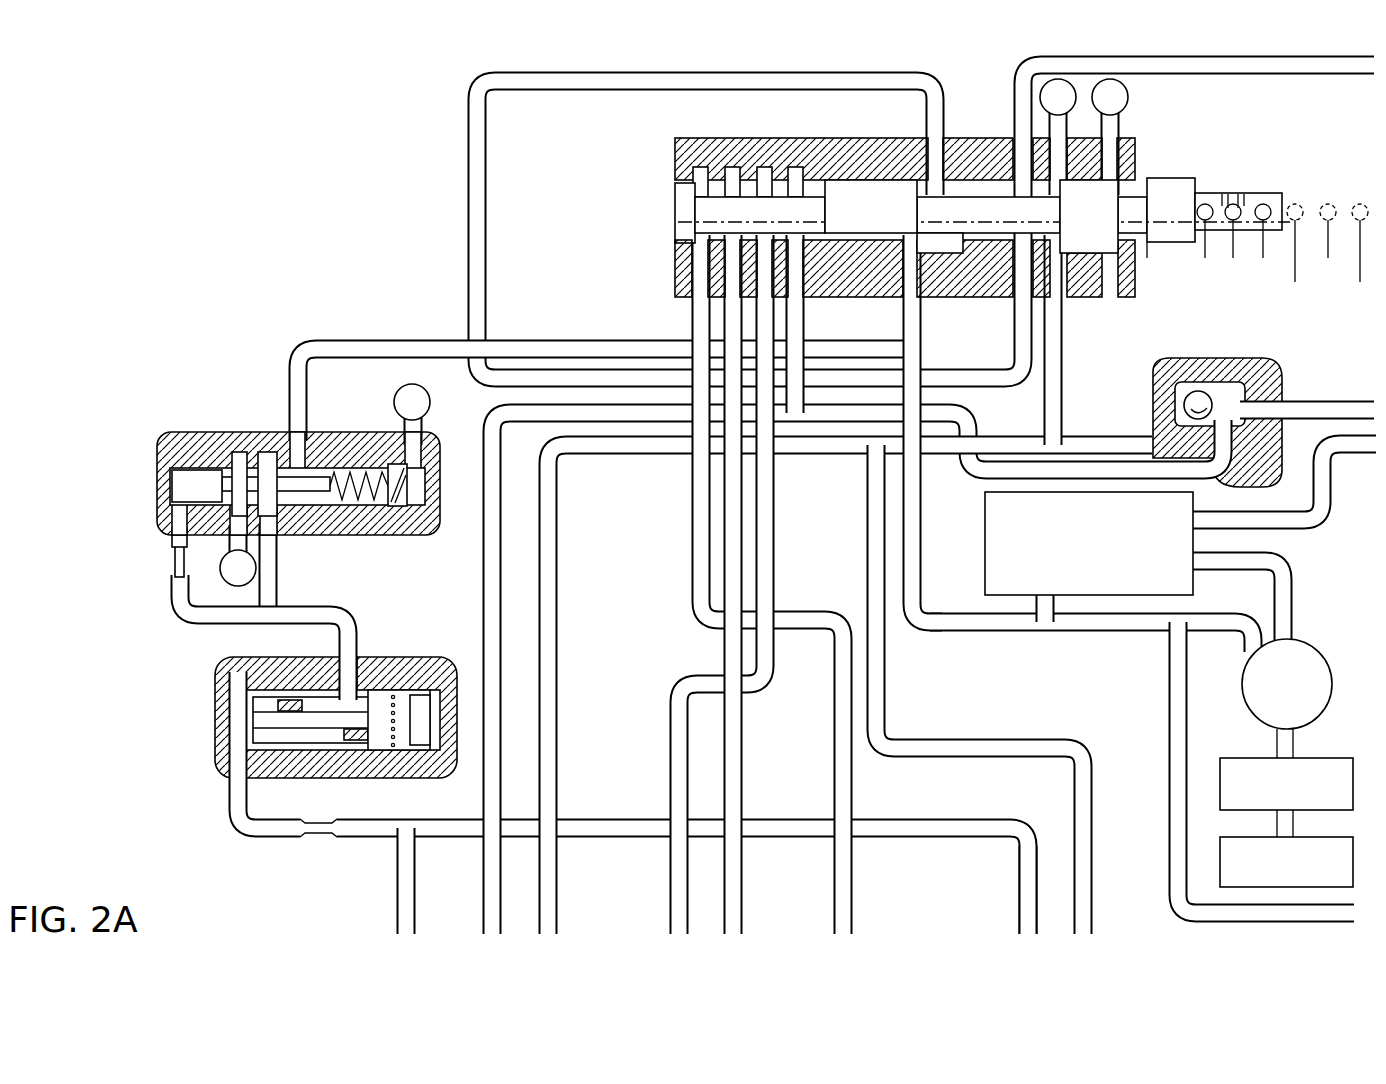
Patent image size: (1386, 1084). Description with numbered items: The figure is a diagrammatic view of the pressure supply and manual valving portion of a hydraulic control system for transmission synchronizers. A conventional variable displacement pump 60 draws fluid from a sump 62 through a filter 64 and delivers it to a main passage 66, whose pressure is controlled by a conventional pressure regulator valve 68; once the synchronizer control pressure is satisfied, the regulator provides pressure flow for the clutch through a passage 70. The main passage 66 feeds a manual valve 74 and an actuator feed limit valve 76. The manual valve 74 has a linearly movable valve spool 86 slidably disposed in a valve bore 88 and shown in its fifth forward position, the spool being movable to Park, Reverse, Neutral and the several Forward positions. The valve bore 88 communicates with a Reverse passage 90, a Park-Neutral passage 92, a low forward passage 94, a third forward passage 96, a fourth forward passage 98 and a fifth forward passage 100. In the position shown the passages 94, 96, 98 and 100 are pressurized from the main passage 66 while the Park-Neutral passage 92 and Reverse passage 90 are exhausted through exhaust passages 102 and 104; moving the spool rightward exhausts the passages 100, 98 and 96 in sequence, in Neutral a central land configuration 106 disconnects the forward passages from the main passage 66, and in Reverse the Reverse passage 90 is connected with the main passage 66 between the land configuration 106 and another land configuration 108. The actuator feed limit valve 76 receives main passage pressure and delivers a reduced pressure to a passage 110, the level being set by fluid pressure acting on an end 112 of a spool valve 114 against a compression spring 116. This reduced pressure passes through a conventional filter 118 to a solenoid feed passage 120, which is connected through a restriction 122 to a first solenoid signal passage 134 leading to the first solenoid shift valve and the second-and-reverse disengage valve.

The variable displacement pump 60 is at (1318, 662).
The sump 62 is at (1232, 856).
The filter 64 is at (1342, 772).
The main passage 66 is at (384, 340).
The pressure regulator valve 68 is at (1178, 580).
The passage 70 is at (1358, 452).
The manual valve 74 is at (960, 128).
The actuator feed limit valve 76 is at (251, 390).
The valve spool 86 is at (853, 188).
The valve bore 88 is at (880, 238).
The Reverse passage 90 is at (1062, 392).
The Park-Neutral passage 92 is at (1266, 68).
The D2-1 passage 94 is at (797, 324).
The D3 passage 96 is at (770, 481).
The D4 passage 98 is at (738, 506).
The D5 passage 100 is at (702, 556).
The exhaust passage 102 is at (1057, 130).
The exhaust passage 104 is at (1113, 122).
The central land configuration 106 is at (946, 218).
The land configuration 108 is at (1097, 213).
The passage 110 is at (306, 613).
The end of spool valve 112 is at (172, 488).
The spool valve 114 is at (208, 478).
The compression spring 116 is at (404, 500).
The filter 118 is at (448, 648).
The solenoid feed passage 120 is at (240, 873).
The restriction 122 is at (320, 838).
The first solenoid signal passage 134 is at (406, 905).